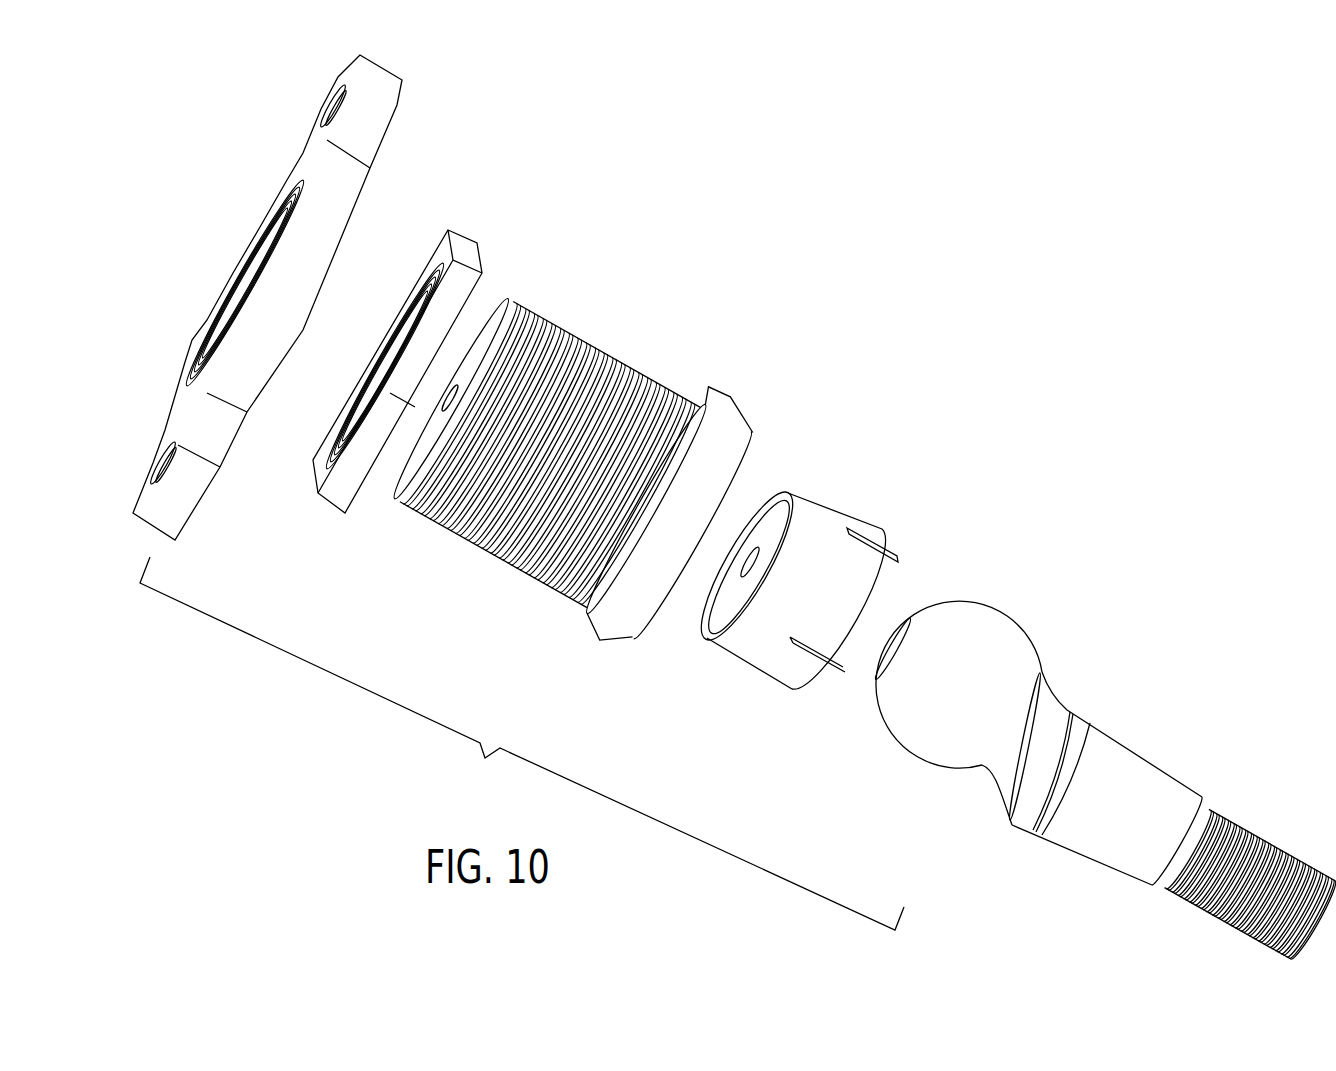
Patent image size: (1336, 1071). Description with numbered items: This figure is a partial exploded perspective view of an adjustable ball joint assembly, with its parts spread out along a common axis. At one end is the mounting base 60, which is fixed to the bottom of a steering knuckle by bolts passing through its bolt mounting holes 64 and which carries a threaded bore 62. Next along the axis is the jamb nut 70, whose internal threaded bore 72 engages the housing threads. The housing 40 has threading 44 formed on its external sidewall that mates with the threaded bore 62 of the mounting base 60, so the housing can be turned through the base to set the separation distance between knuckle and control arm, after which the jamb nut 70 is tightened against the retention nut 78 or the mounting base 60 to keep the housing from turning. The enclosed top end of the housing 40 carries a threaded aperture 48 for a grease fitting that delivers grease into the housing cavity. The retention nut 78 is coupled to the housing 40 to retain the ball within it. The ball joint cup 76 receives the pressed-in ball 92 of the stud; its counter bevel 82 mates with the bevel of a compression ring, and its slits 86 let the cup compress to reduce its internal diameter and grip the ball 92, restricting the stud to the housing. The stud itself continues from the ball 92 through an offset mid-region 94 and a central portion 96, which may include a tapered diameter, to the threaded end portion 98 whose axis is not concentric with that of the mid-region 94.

The housing 40 is at (557, 394).
The threading 44 is at (580, 335).
The threaded aperture 48 is at (518, 303).
The mounting base 60 is at (339, 328).
The threaded bore 62 is at (283, 233).
The bolt mounting holes 64 is at (343, 112).
The jamb nut 70 is at (391, 409).
The threaded aperture of block 72 is at (331, 473).
The ball joint cup 76 is at (816, 600).
The retention nut 78 is at (707, 442).
The counter bevel 82 is at (815, 680).
The slits 86 is at (860, 528).
The ball 92 is at (985, 635).
The mid-region 94 is at (1005, 787).
The central portion 96 is at (1100, 833).
The threaded end portion 98 is at (1220, 912).